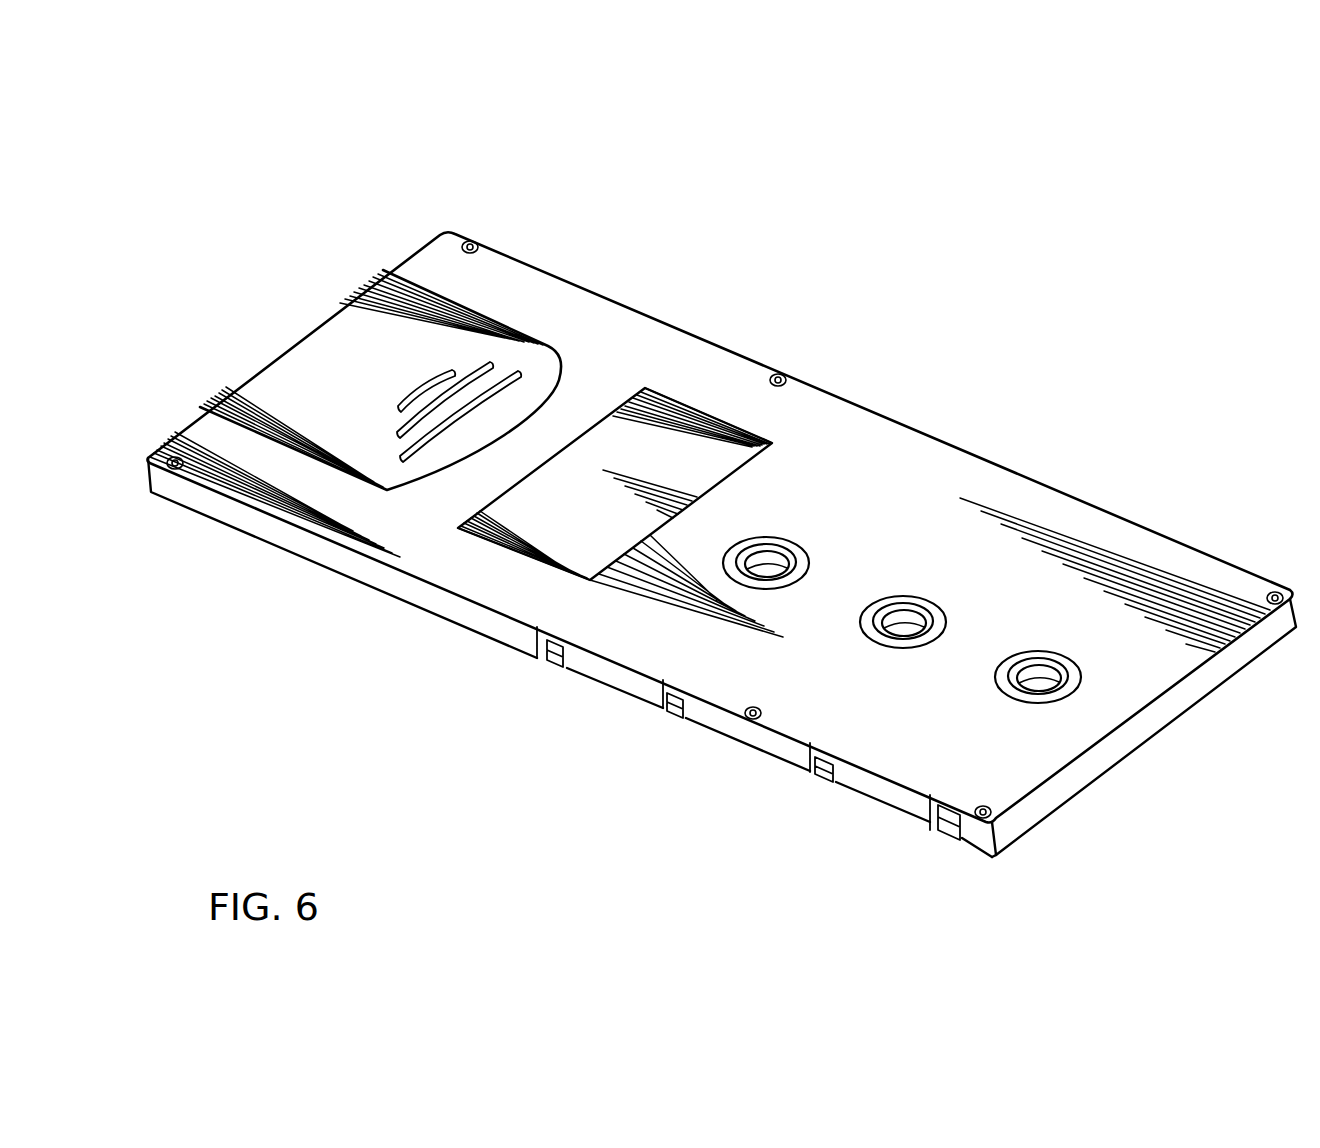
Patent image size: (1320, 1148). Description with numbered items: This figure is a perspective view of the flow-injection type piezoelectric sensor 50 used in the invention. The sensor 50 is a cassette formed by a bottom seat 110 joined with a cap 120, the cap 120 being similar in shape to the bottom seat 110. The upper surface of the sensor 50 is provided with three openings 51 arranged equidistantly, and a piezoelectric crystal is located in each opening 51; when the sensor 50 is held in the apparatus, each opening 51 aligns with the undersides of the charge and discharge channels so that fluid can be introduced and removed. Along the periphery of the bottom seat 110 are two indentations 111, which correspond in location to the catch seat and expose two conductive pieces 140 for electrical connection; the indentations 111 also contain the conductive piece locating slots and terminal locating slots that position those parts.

The flow-injection type piezoelectric sensor 50 is at (490, 233).
The opening 51 is at (772, 560).
The bottom seat 110 is at (423, 602).
The indentation 111 is at (552, 660).
The cap 120 is at (428, 548).
The conductive piece 140 is at (563, 643).